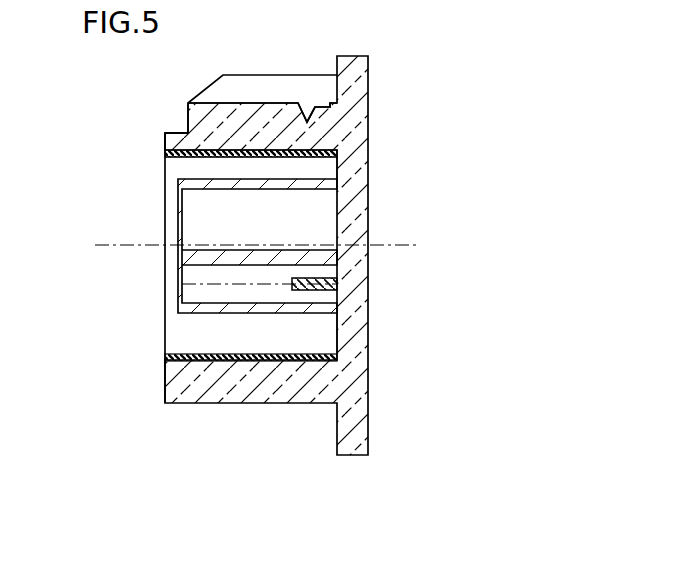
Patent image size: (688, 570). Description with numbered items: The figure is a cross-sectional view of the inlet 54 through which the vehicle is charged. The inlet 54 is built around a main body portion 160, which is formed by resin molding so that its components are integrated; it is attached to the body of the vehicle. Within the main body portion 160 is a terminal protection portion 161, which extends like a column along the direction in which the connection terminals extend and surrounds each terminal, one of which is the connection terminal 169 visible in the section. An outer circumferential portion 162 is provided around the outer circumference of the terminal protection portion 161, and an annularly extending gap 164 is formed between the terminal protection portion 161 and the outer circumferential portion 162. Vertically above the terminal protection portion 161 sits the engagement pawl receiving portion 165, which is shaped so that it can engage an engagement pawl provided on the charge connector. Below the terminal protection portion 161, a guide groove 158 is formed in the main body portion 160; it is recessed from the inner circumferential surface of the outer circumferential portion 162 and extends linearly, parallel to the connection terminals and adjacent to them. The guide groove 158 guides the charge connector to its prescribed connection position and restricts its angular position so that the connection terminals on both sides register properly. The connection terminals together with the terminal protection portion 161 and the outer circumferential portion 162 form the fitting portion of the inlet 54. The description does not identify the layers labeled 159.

The inlet 54 is at (163, 130).
The guide groove 158 is at (197, 353).
The adhesive layer 159 is at (170, 154).
The main body portion 160 is at (368, 115).
The terminal protection portion 161 is at (200, 305).
The outer circumferential portion 162 is at (240, 140).
The gap 164 is at (313, 168).
The engagement pawl receiving portion 165 is at (290, 92).
The connection terminal 169 is at (320, 283).